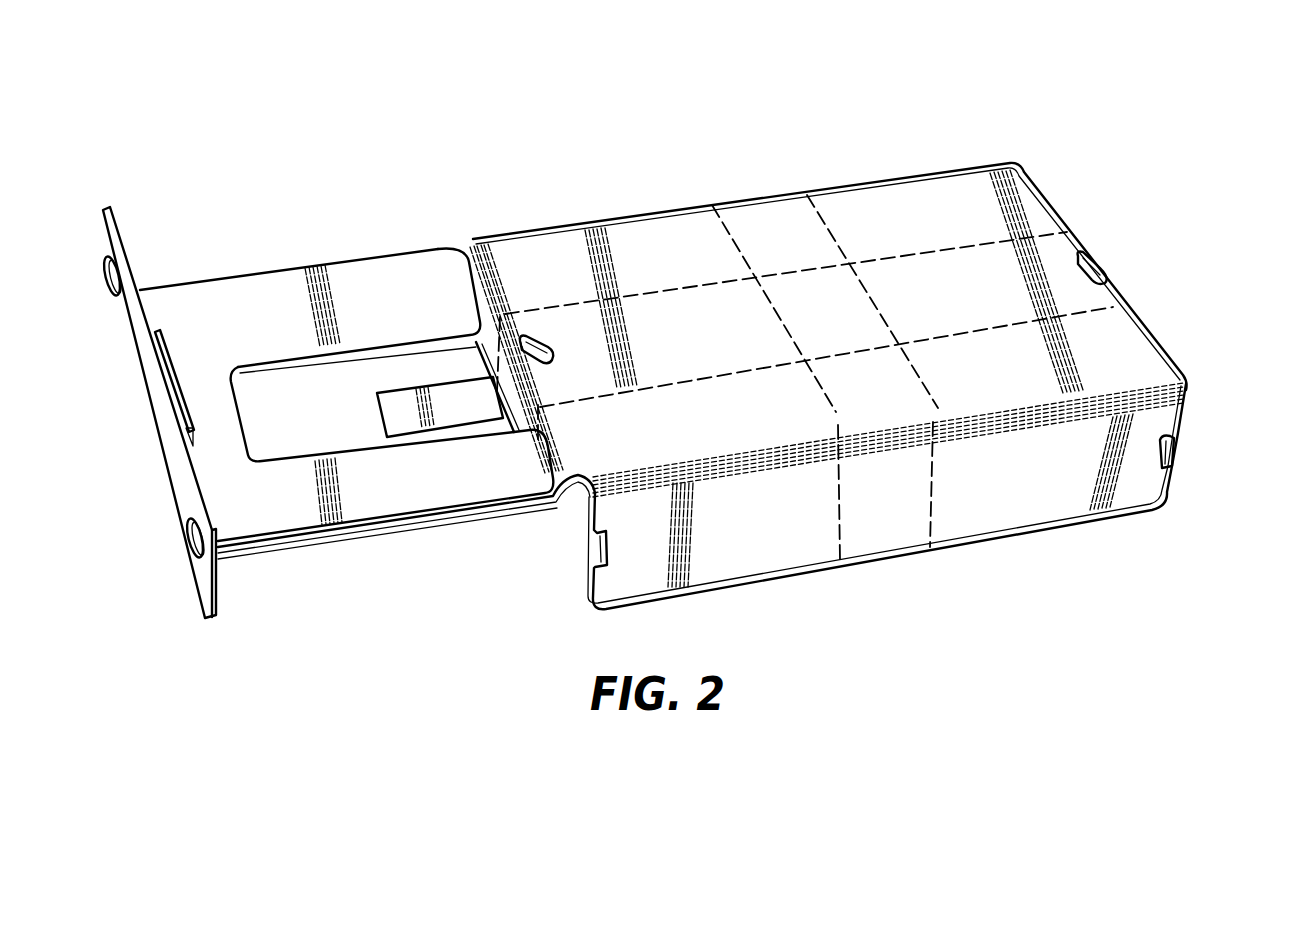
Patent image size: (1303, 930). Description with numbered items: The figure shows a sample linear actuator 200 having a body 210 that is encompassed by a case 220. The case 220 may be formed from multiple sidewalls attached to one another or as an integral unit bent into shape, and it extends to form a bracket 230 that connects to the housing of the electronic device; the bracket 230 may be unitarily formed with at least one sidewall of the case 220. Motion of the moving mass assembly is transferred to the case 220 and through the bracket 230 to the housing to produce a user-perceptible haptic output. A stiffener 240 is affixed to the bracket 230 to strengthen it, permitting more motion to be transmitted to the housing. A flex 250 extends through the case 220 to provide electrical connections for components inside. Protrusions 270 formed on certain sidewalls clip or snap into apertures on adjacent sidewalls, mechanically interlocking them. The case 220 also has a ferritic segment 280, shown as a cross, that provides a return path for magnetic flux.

The linear actuator 200 is at (1036, 94).
The body 210 is at (1089, 227).
The case 220 is at (1133, 367).
The bracket 230 is at (305, 552).
The stiffener 240 is at (339, 290).
The flex 250 is at (402, 408).
The protrusions 270 is at (1101, 257).
The segment 280 is at (905, 510).